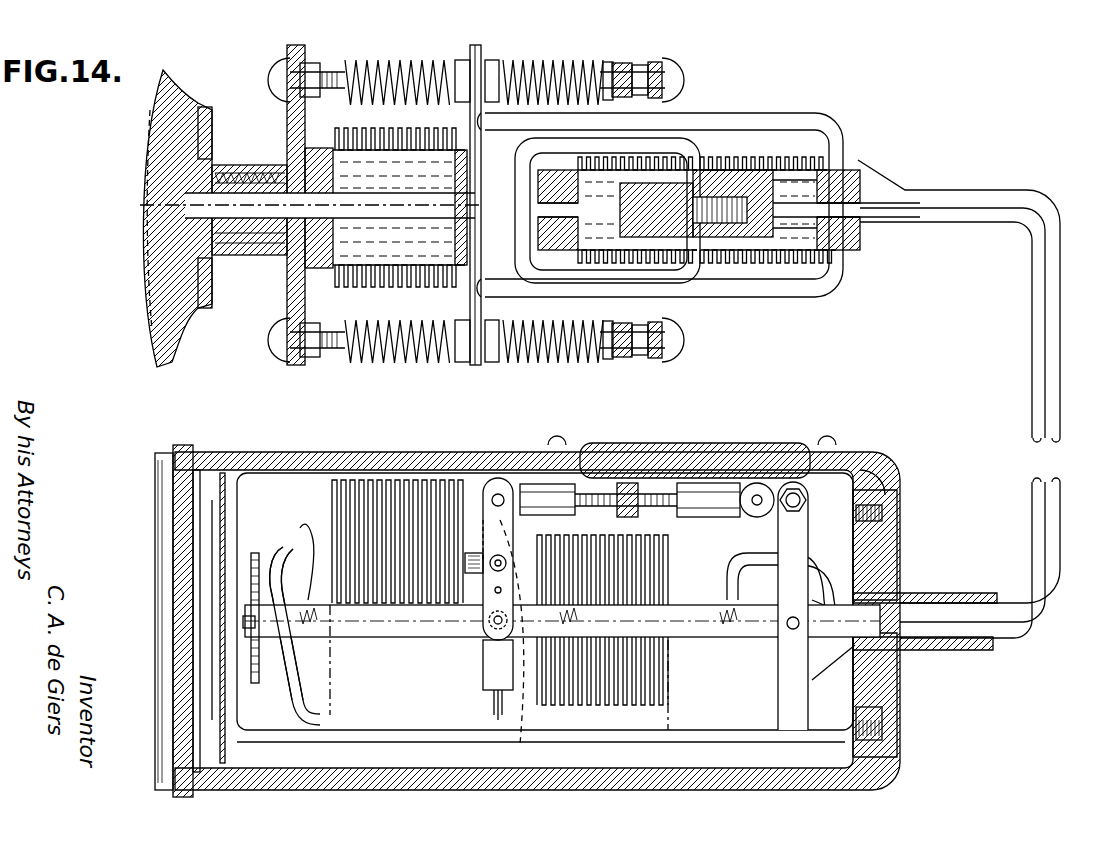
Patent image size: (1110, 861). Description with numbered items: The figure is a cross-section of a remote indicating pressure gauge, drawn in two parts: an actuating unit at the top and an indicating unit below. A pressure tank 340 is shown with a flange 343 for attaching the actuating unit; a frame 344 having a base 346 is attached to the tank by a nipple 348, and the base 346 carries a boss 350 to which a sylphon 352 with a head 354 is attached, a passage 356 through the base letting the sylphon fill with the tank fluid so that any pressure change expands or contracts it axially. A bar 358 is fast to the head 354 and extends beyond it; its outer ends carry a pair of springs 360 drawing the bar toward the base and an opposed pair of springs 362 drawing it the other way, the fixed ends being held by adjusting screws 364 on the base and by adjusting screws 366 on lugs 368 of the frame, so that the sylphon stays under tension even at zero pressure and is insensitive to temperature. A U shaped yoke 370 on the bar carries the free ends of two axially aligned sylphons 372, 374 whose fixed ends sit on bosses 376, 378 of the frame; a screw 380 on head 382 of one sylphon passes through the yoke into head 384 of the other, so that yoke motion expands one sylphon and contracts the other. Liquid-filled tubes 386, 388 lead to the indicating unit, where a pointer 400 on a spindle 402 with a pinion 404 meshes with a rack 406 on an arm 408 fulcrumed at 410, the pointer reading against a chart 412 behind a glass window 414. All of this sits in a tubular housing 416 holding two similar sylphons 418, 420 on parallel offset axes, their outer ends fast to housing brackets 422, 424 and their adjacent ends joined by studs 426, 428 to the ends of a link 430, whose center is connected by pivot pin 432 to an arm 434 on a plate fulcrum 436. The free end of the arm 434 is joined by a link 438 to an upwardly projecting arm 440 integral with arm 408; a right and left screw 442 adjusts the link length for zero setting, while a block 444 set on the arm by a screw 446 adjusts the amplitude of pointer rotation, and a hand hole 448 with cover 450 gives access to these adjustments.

The pressure tank 340 is at (172, 84).
The flange 343 is at (208, 115).
The base 346 is at (287, 135).
The nipple 348 is at (248, 245).
The boss 350 is at (315, 245).
The sylphon 352 is at (395, 150).
The head 354 is at (455, 215).
The bore passage 356 is at (200, 205).
The bar 358 is at (482, 242).
The springs 360 is at (395, 60).
The springs 362 is at (545, 60).
The adjusting screws 364 is at (305, 58).
The adjusting screws 366 is at (622, 63).
The lugs 368 is at (668, 62).
The U shaped yoke 370 is at (530, 153).
The sylphon 372 is at (618, 262).
The sylphon 374 is at (752, 262).
The boss 376 is at (558, 248).
The boss 378 is at (852, 258).
The screw 380 is at (740, 185).
The head 382 is at (656, 210).
The head 384 is at (760, 205).
The tube 386 is at (900, 175).
The tube 388 is at (928, 222).
The frame 344 is at (738, 113).
The pointer 400 is at (210, 521).
The spindle 402 is at (243, 623).
The pinion 404 is at (255, 553).
The rack 406 is at (288, 547).
The arm 408 is at (360, 637).
The fulcrum 410 is at (787, 626).
The chart 412 is at (198, 727).
The glass window 414 is at (178, 687).
The tubular housing 416 is at (388, 455).
The sylphon 418 is at (367, 480).
The sylphon 420 is at (615, 548).
The housing bracket 422 is at (332, 686).
The housing bracket 424 is at (675, 689).
The stud 426 is at (483, 485).
The stud 428 is at (520, 745).
The link 430 is at (508, 540).
The pivot pin 432 is at (495, 593).
The arm 434 is at (483, 675).
The plate fulcrum 436 is at (480, 698).
The link 438 is at (530, 484).
The upwardly projecting arm 440 is at (800, 530).
The right and left screw 442 is at (630, 483).
The block 444 is at (856, 470).
The screw 446 is at (793, 489).
The hand hole 448 is at (728, 443).
The cover 450 is at (715, 483).